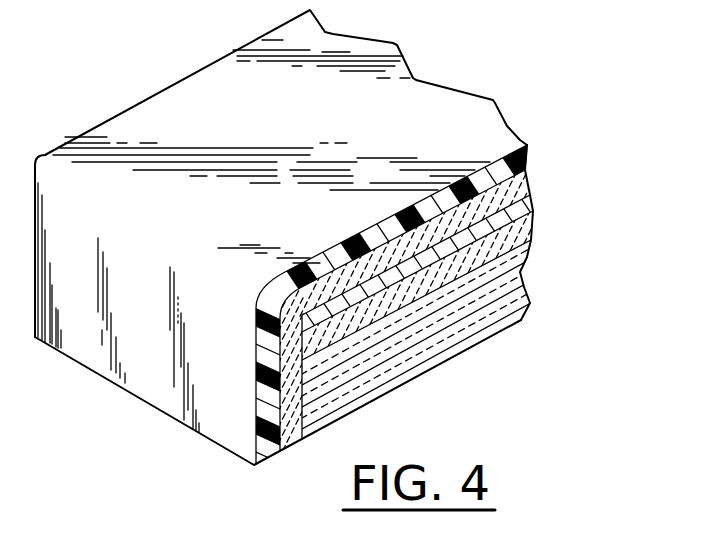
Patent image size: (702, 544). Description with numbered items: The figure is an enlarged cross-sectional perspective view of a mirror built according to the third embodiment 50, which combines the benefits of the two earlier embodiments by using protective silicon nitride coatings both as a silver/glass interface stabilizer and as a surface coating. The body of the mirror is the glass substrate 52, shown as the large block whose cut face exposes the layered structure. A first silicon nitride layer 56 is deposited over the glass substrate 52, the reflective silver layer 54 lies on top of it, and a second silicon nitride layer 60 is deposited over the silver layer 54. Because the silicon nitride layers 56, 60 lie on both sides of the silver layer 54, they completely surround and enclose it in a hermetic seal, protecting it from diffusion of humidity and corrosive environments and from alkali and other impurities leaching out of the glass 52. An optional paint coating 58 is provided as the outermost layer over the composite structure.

The third embodiment 50 is at (419, 63).
The glass substrate 52 is at (522, 277).
The silver layer 54 is at (531, 199).
The silicon nitride layer 56 is at (532, 226).
The paint coating 58 is at (528, 147).
The silicon nitride layer 60 is at (524, 172).